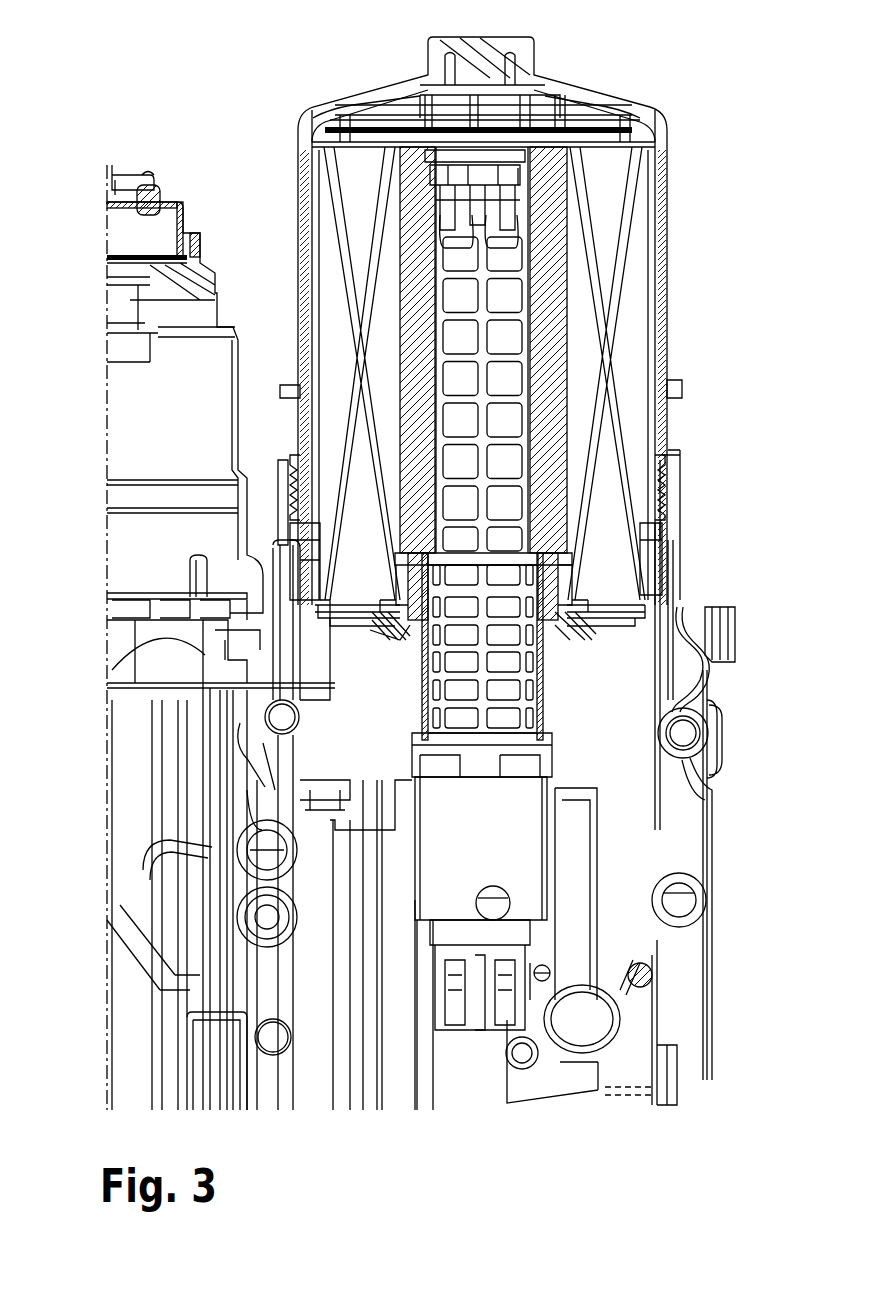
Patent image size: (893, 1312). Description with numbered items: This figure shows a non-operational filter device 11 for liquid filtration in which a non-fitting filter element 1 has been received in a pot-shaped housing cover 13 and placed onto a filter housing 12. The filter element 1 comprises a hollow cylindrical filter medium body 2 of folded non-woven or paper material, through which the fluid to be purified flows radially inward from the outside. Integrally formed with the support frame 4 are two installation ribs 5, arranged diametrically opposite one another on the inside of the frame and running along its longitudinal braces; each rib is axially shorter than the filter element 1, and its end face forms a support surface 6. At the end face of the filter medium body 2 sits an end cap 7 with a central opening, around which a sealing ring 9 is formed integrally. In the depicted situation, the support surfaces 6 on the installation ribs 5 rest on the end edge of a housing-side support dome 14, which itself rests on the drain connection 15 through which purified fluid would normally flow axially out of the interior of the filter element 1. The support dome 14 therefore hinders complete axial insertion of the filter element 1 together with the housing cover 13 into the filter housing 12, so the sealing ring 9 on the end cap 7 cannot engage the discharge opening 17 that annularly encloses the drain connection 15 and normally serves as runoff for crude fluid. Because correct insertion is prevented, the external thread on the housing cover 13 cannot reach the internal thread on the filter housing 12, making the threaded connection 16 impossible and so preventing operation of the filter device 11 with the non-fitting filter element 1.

The filter element 1 is at (642, 216).
The filter medium body 2 is at (626, 279).
The support frame 4 is at (500, 380).
The installation ribs 5 is at (412, 306).
The support surface 6 is at (408, 568).
The end cap 7 is at (336, 613).
The sealing ring 9 is at (382, 641).
The filter device 11 is at (259, 84).
The filter housing 12 is at (680, 578).
The housing cover 13 is at (633, 110).
The support dome 14 is at (543, 683).
The drain connection 15 is at (547, 837).
The threaded connection 16 is at (664, 476).
The discharge opening 17 is at (592, 797).